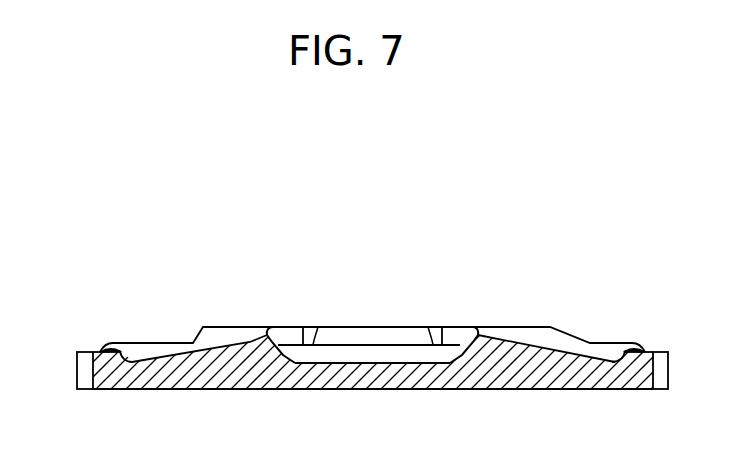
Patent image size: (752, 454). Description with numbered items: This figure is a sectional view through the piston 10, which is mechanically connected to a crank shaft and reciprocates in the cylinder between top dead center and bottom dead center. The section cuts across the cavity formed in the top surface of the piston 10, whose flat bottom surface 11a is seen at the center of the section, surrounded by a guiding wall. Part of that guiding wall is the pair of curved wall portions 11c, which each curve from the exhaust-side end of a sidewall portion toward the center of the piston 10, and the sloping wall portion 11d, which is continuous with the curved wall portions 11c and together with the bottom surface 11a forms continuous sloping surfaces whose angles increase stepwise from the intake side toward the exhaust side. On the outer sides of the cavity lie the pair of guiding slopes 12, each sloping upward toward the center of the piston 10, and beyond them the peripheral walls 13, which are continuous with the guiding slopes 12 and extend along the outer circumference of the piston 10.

The piston 10 is at (393, 220).
The bottom surface 11a is at (336, 350).
The curved wall portions 11c is at (290, 334).
The sloping wall portion 11d is at (383, 334).
The guiding slopes 12 is at (147, 347).
The peripheral walls 13 is at (104, 350).